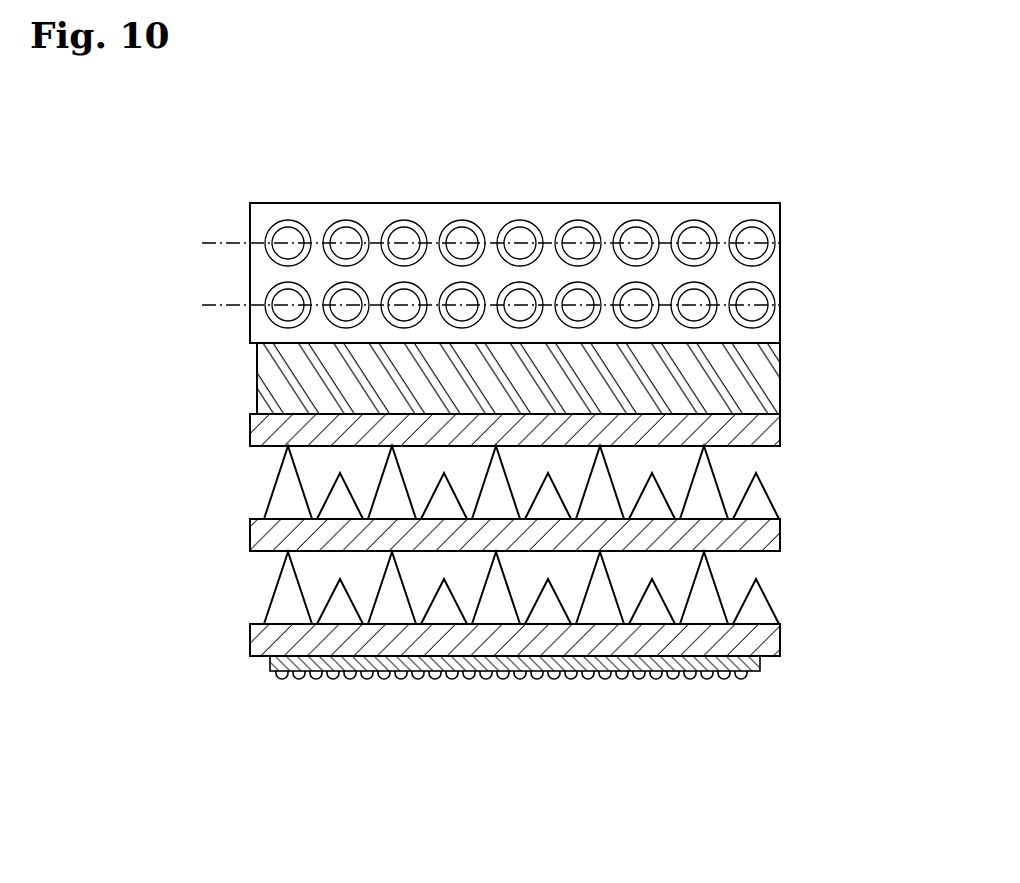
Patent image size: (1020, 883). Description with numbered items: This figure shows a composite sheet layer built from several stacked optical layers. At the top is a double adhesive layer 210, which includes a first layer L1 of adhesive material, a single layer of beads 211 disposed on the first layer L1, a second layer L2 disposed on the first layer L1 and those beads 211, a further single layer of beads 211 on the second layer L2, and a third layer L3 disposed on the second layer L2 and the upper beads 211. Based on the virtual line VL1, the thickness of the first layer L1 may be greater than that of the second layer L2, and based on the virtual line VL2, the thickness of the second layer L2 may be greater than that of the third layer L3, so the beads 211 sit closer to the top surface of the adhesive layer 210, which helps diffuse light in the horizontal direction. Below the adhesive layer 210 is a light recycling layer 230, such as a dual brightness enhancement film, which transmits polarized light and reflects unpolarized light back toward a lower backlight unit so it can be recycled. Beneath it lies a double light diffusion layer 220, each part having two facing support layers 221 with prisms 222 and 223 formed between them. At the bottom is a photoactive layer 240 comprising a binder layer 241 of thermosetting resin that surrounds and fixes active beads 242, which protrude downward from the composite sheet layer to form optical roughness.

The adhesive layer 210 is at (538, 249).
The beads 211 is at (286, 218).
The virtual line VL1 is at (466, 304).
The virtual line VL2 is at (466, 242).
The first layer L1 is at (548, 334).
The second layer L2 is at (775, 272).
The third layer L3 is at (775, 213).
The light recycling layer 230 is at (305, 382).
The light diffusion layer 220 is at (471, 535).
The support layers 221 is at (268, 425).
The prisms 222 is at (340, 611).
The prisms 223 is at (285, 493).
The photoactive layer 240 is at (517, 716).
The binder layer 241 is at (740, 680).
The active beads 242 is at (673, 673).